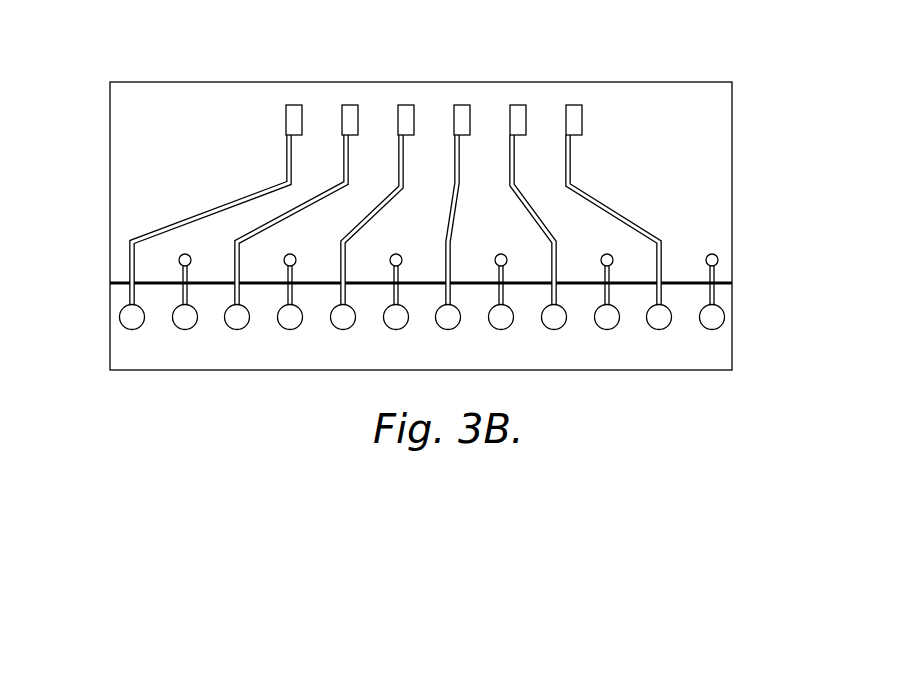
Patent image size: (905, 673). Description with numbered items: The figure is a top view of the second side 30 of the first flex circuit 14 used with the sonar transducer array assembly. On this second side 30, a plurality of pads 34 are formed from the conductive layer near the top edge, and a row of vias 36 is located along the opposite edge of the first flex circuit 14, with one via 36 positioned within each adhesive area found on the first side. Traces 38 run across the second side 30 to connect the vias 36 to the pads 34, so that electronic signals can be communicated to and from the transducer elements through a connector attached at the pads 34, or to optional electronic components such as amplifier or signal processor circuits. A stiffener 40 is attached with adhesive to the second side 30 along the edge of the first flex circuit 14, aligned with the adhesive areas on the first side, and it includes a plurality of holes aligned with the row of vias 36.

The first flex circuit 14 is at (492, 65).
The second side 30 is at (693, 102).
The pads 34 is at (351, 104).
The vias 36 is at (182, 329).
The traces 38 is at (170, 225).
The stiffener 40 is at (735, 291).